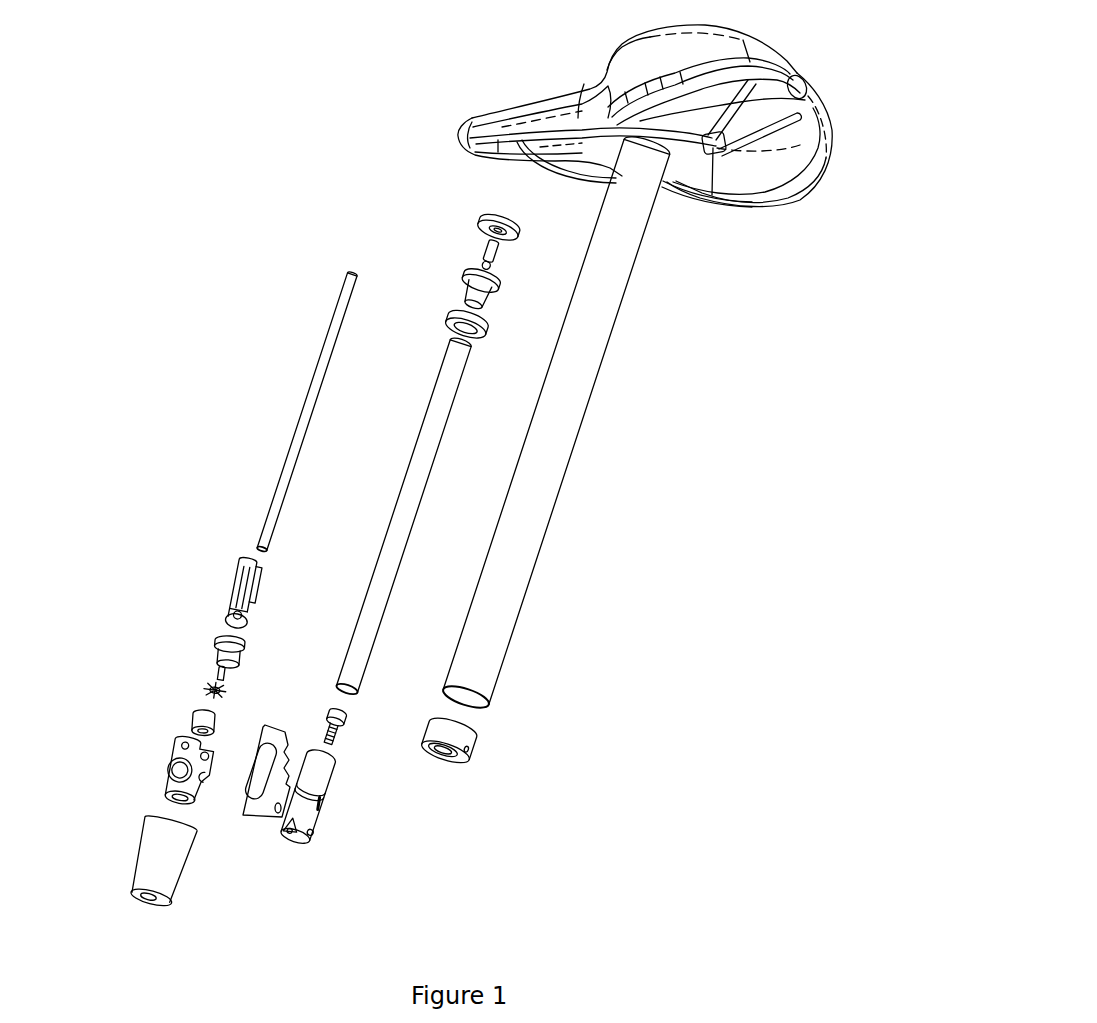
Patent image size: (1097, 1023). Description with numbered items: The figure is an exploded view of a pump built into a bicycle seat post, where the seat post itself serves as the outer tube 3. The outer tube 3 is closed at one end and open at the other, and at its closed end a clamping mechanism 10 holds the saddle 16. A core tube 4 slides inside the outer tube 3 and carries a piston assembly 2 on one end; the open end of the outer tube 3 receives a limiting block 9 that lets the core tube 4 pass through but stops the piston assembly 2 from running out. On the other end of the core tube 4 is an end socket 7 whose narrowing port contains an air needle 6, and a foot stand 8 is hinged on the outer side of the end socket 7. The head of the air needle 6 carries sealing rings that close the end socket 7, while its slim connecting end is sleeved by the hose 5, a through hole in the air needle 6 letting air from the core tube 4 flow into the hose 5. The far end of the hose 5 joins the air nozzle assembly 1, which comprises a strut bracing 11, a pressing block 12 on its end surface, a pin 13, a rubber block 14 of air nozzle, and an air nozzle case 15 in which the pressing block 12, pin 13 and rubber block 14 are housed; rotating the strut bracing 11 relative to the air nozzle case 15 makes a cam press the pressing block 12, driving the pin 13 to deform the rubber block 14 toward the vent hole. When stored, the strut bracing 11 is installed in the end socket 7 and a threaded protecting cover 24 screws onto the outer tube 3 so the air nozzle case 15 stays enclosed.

The air nozzle assembly 1 is at (248, 672).
The piston assembly 2 is at (458, 235).
The outer tube 3 is at (558, 392).
The core tube 4 is at (402, 520).
The hose 5 is at (303, 410).
The air needle 6 is at (340, 725).
The end socket 7 is at (327, 797).
The foot stand 8 is at (258, 807).
The limiting block 9 is at (467, 738).
The clamping mechanism 10 is at (665, 192).
The strut bracing 11 is at (233, 588).
The pressing block 12 is at (215, 645).
The pin 13 is at (210, 683).
The rubber block of air nozzle 14 is at (195, 720).
The air nozzle case 15 is at (178, 760).
The saddle 16 is at (593, 96).
The protecting cover 24 is at (155, 858).